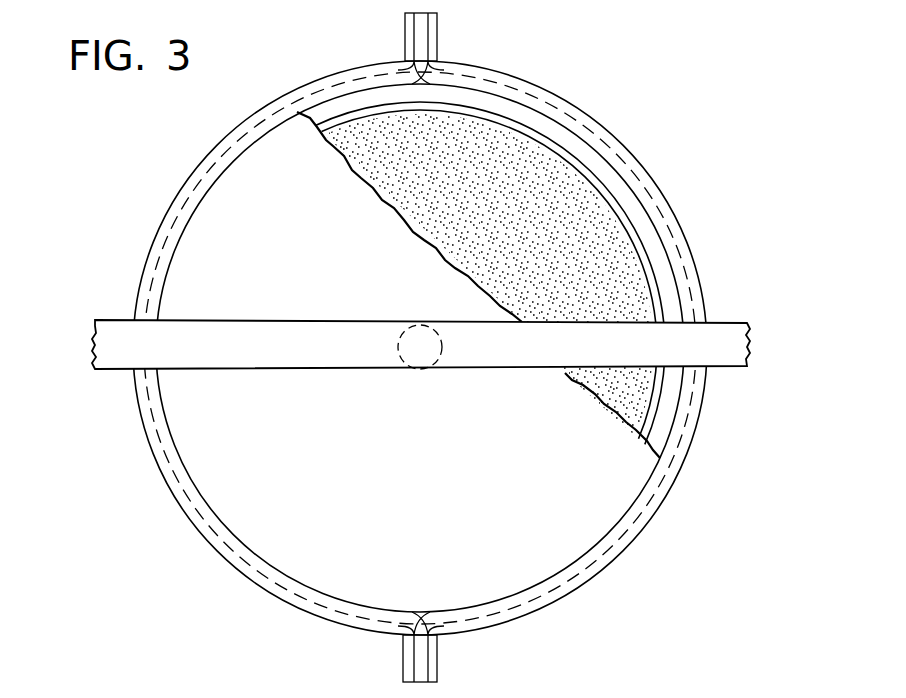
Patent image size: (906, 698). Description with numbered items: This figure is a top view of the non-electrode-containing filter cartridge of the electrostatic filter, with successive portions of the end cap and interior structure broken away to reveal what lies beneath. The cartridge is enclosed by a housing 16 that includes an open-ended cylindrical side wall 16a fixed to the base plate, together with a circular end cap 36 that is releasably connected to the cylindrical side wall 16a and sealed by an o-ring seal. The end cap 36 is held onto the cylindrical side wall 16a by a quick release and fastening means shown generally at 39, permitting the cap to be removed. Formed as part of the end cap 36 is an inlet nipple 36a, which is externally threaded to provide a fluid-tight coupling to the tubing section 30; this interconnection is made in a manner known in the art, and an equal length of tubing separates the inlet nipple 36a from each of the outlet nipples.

The housing 16 is at (632, 138).
The cylindrical side wall 16a is at (642, 227).
The quick release and fastening means 39 is at (620, 556).
The end cap 36 is at (233, 190).
The inlet nipple 36a is at (440, 358).
The tubing section 30 is at (276, 356).